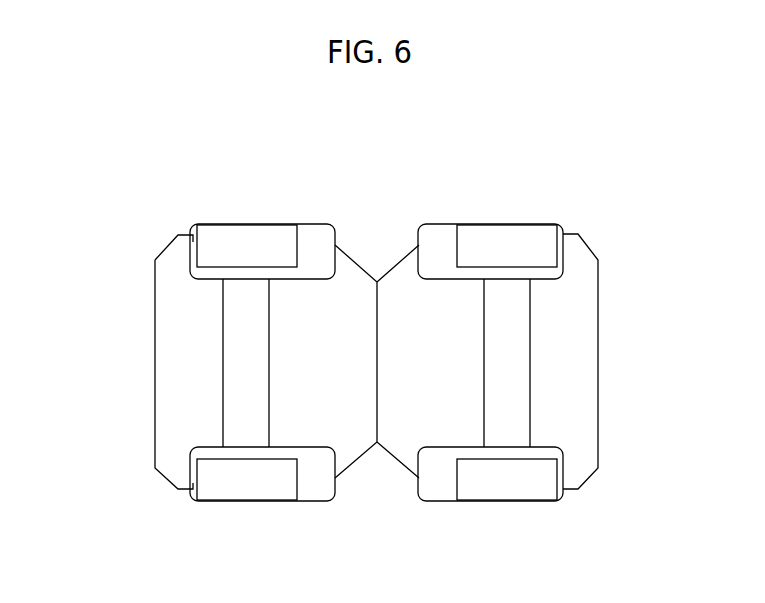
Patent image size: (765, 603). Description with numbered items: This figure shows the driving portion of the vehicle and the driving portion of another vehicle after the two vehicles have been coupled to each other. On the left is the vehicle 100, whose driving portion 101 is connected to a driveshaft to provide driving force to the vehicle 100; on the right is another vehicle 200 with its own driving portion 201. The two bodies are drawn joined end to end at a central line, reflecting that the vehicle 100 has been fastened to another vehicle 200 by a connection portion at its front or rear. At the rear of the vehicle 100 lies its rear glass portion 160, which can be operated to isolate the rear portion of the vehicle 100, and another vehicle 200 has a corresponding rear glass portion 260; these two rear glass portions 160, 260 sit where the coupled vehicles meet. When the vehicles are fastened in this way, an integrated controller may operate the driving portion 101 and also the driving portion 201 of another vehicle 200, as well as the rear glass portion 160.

The vehicle 100 is at (246, 208).
The driving portion 101 is at (240, 372).
The rear glass portion 160 is at (362, 347).
The another vehicle 200 is at (499, 203).
The driving portion of another vehicle 201 is at (513, 370).
The rear glass portion of another vehicle 260 is at (393, 347).